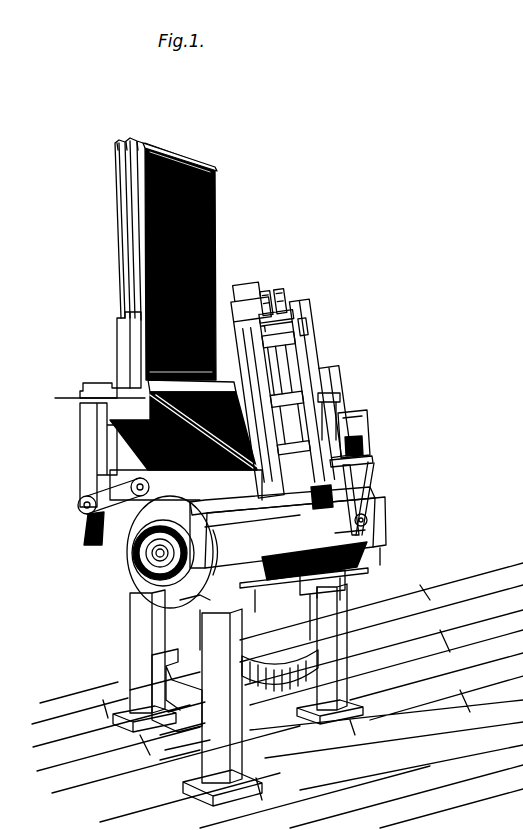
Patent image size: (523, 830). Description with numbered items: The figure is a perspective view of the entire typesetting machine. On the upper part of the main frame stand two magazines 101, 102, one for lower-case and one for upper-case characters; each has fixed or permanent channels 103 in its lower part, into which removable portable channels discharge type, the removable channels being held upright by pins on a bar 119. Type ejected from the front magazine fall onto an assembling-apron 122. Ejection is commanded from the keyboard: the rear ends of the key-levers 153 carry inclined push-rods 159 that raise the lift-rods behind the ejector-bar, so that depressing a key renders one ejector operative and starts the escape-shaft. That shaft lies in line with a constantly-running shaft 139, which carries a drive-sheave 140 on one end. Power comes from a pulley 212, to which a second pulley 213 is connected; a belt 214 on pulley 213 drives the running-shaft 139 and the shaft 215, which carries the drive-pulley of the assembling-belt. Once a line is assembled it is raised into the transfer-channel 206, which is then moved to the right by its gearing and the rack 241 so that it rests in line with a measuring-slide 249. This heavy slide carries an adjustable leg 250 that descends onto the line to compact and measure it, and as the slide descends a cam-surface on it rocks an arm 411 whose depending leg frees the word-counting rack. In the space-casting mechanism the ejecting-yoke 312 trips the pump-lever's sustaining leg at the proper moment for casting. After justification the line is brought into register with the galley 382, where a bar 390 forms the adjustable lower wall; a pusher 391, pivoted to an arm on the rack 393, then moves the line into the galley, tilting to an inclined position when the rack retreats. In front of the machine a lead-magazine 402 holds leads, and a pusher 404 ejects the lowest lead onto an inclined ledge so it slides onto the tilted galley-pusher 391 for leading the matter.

The bar 119 is at (183, 161).
The magazine 101 is at (217, 237).
The magazine 102 is at (119, 220).
The fixed magazine-channel 103 is at (140, 353).
The assembling-apron 122 is at (80, 398).
The inclined push-rod 159 is at (112, 428).
The shaft 215 is at (131, 486).
The belt 214 is at (78, 504).
The constantly-running shaft 139 is at (82, 506).
The drive-sheave 140 is at (85, 515).
The second pulley 213 is at (130, 553).
The pulley 212 is at (142, 566).
The galley 382 is at (282, 527).
The key-lever 153 is at (366, 558).
The measuring-slide 249 is at (259, 292).
The arm 411 is at (282, 312).
The transfer-channel 206 is at (288, 382).
The adjustable leg 250 is at (288, 360).
The rack 241 is at (340, 410).
The ejecting-yoke 312 is at (363, 428).
The lead-magazine 402 is at (369, 441).
The pusher 404 is at (368, 459).
The pusher 391 is at (366, 492).
The rack 393 is at (368, 505).
The bar 390 is at (345, 528).